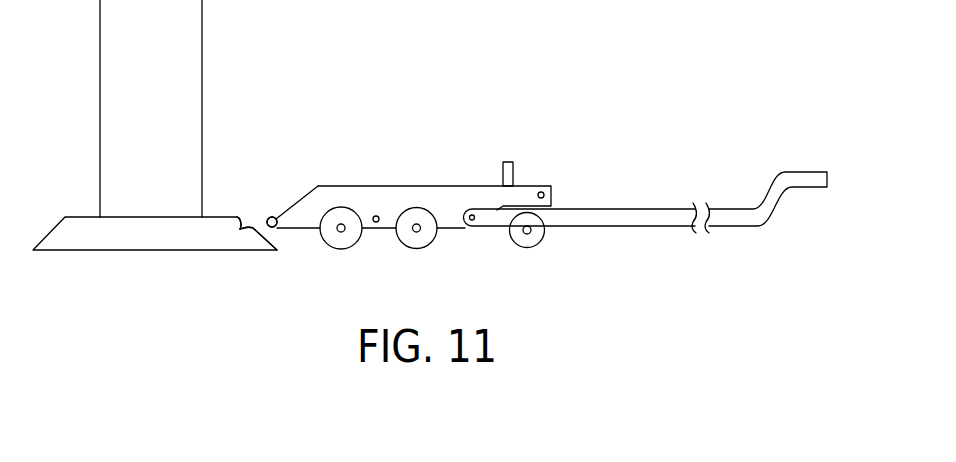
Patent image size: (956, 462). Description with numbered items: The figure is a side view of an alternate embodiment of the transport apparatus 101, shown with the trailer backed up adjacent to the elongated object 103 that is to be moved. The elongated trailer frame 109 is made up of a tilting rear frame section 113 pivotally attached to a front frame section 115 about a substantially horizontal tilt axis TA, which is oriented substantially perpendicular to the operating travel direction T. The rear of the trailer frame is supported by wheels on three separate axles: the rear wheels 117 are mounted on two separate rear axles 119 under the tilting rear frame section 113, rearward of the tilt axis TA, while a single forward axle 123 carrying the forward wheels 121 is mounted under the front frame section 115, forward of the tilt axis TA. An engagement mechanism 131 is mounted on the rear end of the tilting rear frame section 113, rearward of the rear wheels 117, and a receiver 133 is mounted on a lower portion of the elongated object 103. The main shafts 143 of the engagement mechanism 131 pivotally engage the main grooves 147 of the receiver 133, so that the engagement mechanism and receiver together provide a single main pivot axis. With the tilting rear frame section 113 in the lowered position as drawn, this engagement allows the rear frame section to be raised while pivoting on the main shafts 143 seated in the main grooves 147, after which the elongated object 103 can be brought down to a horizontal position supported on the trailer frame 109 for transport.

The transport apparatus 101 is at (372, 78).
The elongated object 103 is at (203, 52).
The elongated trailer frame 109 is at (582, 209).
The tilting rear frame section 113 is at (453, 186).
The front frame section 115 is at (615, 209).
The rear wheels 117 is at (396, 237).
The rear axles 119 is at (413, 226).
The forward wheels 121 is at (537, 247).
The forward axle 123 is at (531, 231).
The engagement mechanism 131 is at (292, 206).
The receiver 133 is at (252, 231).
The main shafts 143 is at (271, 217).
The main grooves 147 is at (238, 231).
The tilt axis TA is at (471, 227).
The operating travel direction T is at (830, 143).